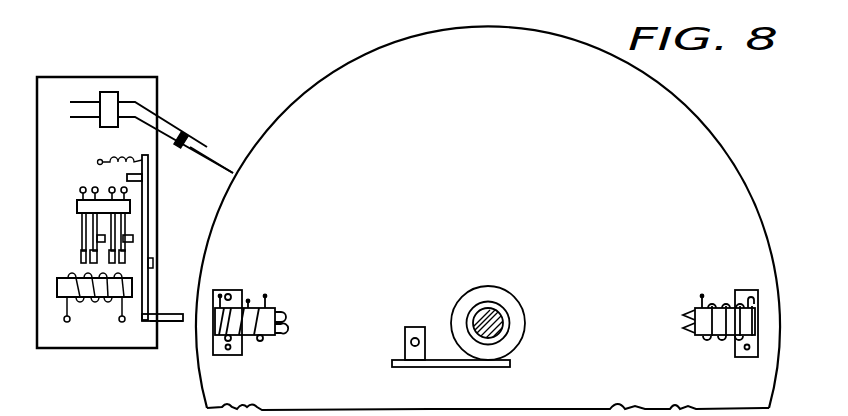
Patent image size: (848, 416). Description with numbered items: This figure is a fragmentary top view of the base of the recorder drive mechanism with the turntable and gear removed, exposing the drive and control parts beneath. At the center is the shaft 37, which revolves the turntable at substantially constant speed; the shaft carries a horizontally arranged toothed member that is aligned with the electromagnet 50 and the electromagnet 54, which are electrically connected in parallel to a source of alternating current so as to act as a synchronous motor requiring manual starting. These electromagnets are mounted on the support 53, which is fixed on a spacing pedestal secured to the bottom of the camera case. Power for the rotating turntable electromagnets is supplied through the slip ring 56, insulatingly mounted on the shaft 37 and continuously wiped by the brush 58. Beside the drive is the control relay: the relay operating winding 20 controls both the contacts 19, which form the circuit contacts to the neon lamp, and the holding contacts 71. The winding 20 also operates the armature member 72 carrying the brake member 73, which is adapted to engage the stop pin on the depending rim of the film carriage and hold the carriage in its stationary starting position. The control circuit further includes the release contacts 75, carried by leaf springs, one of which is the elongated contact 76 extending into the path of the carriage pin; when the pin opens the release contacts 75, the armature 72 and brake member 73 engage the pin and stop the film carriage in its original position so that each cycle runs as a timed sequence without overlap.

The contacts 19 is at (83, 245).
The relay operating winding 20 is at (90, 302).
The shaft 37 is at (501, 313).
The electromagnet 50 is at (245, 316).
The support 53 is at (699, 143).
The spacing pedestal 54 is at (728, 306).
The slip ring 56 is at (512, 345).
The brush 58 is at (502, 367).
The holding contacts 71 is at (126, 234).
The armature member 72 is at (149, 249).
The brake member 73 is at (172, 324).
The release contacts 75 is at (173, 130).
The elongated contact 76 is at (213, 171).